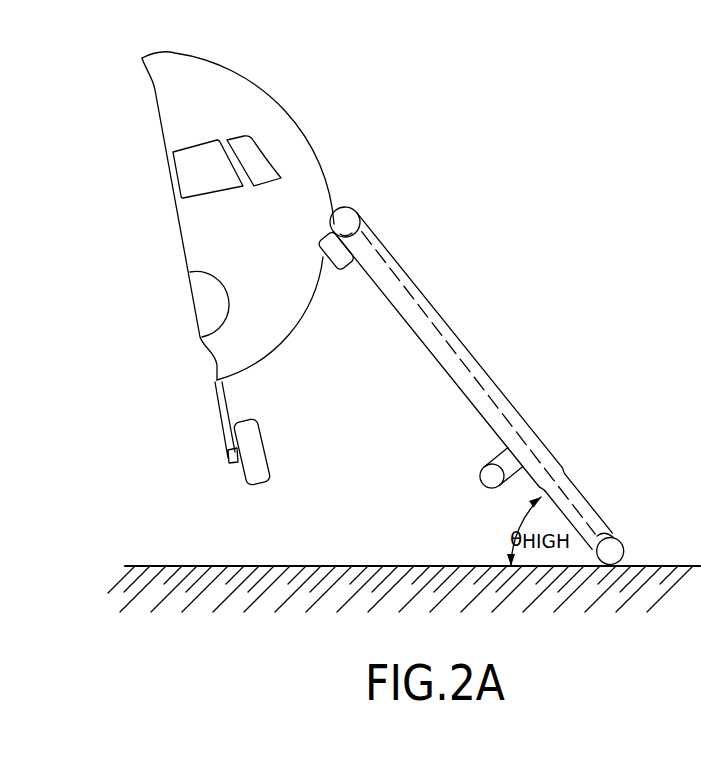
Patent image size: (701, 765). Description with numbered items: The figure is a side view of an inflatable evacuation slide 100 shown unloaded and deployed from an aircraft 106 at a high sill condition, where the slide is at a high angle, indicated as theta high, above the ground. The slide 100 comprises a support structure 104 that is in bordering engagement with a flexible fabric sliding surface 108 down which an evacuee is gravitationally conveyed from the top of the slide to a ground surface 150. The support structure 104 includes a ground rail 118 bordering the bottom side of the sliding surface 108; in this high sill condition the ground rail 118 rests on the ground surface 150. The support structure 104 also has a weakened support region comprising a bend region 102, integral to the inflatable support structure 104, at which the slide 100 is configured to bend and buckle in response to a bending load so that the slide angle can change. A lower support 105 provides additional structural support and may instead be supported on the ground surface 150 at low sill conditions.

The slide 100 is at (470, 295).
The bend region 102 is at (576, 469).
The support structure 104 is at (430, 338).
The lower support 105 is at (493, 480).
The aircraft 106 is at (290, 112).
The sliding surface 108 is at (470, 378).
The ground rail 118 is at (621, 543).
The ground surface 150 is at (649, 565).